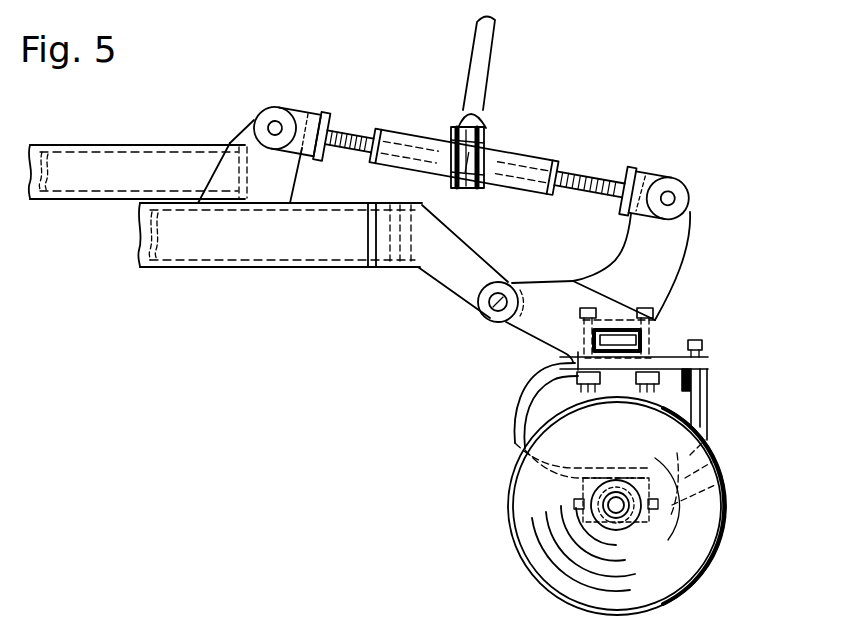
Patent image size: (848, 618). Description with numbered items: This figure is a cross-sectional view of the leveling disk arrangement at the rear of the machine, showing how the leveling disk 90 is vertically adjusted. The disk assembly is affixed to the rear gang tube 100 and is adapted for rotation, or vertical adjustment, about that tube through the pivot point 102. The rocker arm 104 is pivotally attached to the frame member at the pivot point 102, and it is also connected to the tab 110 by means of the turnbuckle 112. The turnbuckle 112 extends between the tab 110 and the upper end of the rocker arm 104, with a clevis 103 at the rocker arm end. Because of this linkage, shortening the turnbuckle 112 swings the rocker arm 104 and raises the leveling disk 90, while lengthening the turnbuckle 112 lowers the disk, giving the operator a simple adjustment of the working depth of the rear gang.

The leveling disk 90 is at (718, 550).
The rear gang tube 100 is at (655, 340).
The pivot point 102 is at (485, 325).
The clevis 103 is at (669, 194).
The rocker arm 104 is at (665, 236).
The tab 110 is at (248, 138).
The turnbuckle 112 is at (503, 150).